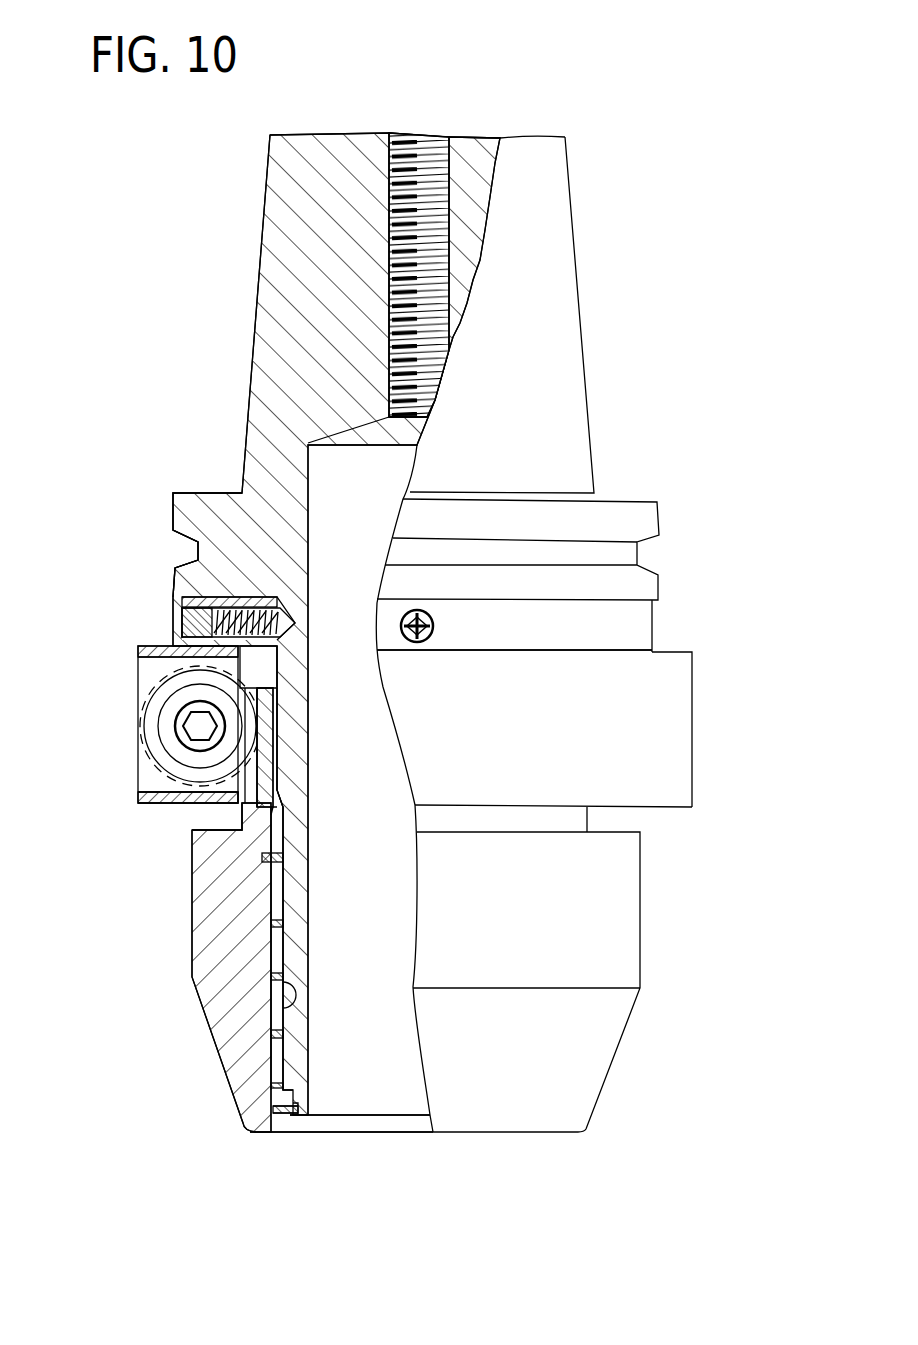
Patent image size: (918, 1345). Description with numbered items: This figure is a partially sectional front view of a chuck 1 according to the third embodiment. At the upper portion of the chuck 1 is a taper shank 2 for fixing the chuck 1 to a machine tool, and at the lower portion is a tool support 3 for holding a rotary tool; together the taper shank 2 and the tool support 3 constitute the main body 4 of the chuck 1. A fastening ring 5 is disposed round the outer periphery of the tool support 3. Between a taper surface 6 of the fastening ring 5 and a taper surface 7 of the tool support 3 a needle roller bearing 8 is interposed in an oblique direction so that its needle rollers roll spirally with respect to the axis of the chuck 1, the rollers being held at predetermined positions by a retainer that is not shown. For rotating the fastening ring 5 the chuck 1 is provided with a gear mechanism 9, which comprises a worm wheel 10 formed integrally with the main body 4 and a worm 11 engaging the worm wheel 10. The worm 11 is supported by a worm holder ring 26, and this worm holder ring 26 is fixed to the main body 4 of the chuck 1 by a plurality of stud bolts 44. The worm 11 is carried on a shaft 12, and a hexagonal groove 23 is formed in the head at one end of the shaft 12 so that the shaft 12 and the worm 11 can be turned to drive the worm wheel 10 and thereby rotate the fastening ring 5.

The chuck 1 is at (632, 335).
The taper shank 2 is at (253, 320).
The tool support 3 is at (308, 1073).
The main body 4 is at (173, 578).
The fastening ring 5 is at (188, 938).
The taper surface 6 is at (272, 1032).
The taper surface 7 is at (273, 983).
The needle roller bearing 8 is at (285, 1080).
The gear mechanism 9 is at (106, 761).
The worm wheel 10 is at (195, 830).
The worm 11 is at (140, 780).
The shaft 12 is at (193, 703).
The hexagonal groove 23 is at (193, 727).
The worm holder ring 26 is at (693, 741).
The stud bolts 44 is at (187, 614).